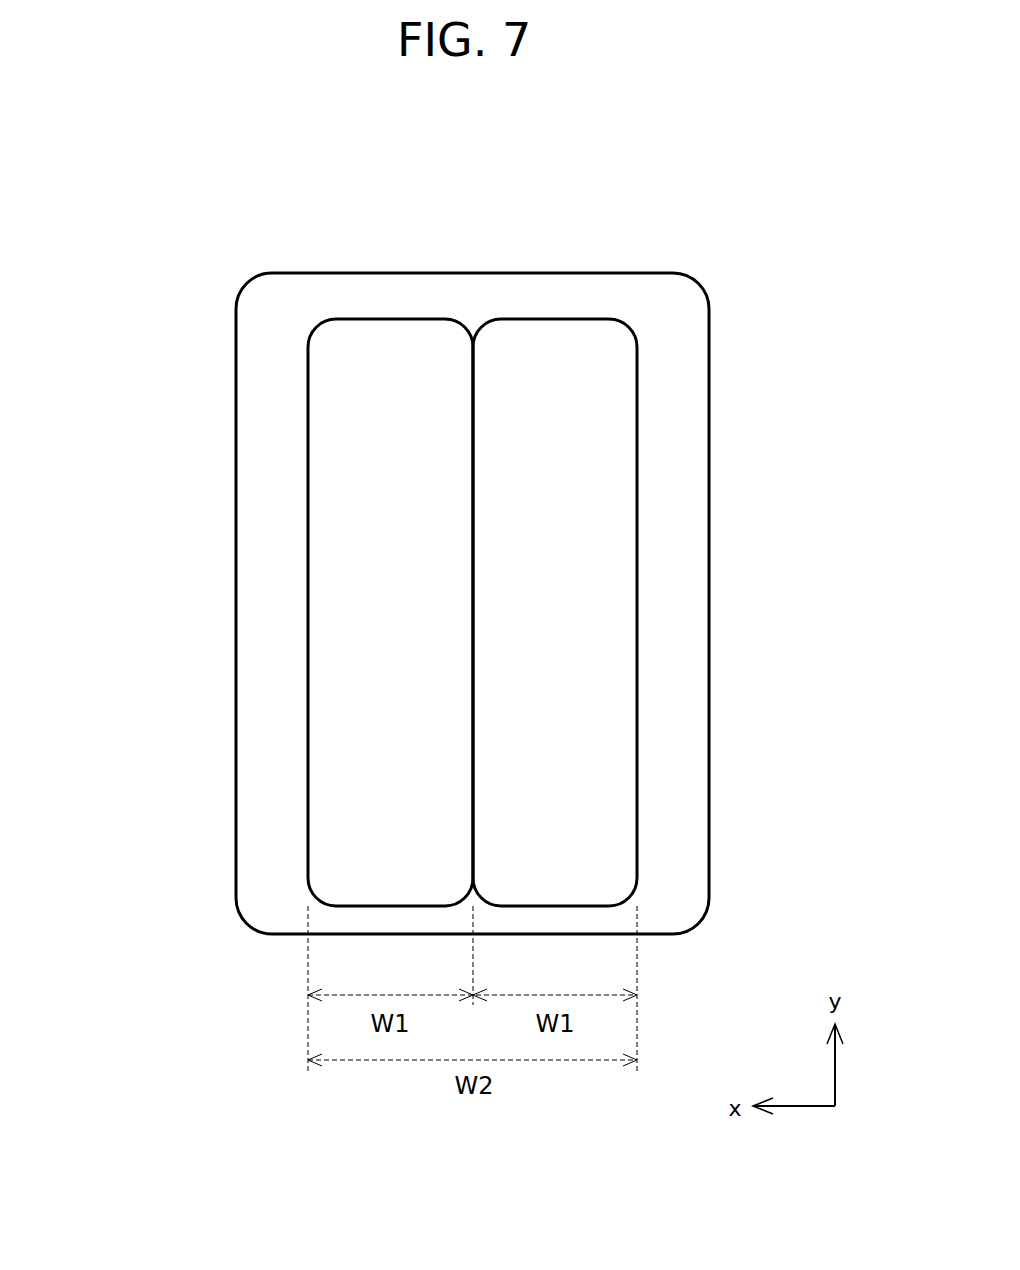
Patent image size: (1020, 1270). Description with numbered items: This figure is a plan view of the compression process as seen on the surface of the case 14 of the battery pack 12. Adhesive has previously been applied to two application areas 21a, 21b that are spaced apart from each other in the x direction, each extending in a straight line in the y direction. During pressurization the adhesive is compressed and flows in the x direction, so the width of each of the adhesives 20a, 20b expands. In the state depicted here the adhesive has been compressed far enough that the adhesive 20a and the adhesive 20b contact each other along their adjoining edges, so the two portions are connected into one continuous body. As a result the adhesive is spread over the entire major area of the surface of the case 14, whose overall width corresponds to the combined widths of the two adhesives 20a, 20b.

The battery pack 12 is at (776, 683).
The case 14 is at (673, 568).
The adhesive 20a is at (367, 800).
The adhesive 20b is at (580, 799).
The application area 21a is at (392, 305).
The application area 21b is at (557, 305).